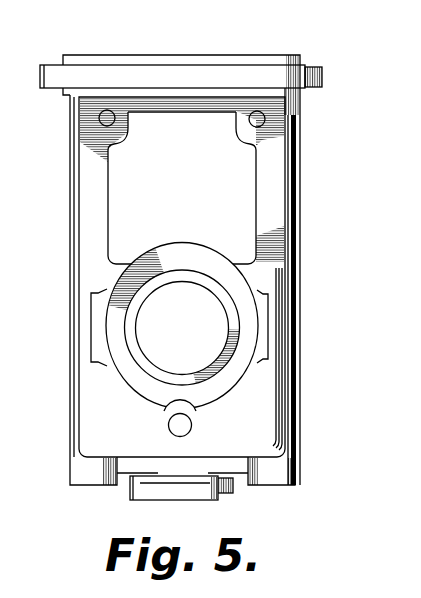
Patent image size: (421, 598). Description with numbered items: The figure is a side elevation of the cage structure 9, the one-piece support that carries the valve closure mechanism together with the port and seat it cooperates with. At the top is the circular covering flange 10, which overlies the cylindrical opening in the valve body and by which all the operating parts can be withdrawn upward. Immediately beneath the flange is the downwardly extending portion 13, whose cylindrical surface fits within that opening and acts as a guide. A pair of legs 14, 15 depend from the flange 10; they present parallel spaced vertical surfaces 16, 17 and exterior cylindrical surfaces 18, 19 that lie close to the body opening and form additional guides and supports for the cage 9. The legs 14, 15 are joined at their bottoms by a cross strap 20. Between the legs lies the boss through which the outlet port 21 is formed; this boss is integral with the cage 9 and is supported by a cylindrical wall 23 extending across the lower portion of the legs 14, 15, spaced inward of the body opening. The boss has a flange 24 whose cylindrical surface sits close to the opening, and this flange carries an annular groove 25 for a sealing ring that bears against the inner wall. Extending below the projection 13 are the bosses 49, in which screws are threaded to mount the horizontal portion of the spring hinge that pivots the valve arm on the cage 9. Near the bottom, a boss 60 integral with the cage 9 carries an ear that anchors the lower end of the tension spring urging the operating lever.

The cage structure 9 is at (303, 188).
The circular covering flange 10 is at (320, 75).
The downwardly extending portion 13 is at (72, 103).
The leg 14 is at (83, 195).
The leg 15 is at (274, 156).
The vertical surface 16 is at (255, 172).
The vertical surface 17 is at (110, 183).
The exterior cylindrical surface 18 is at (297, 212).
The exterior cylindrical surface 19 is at (73, 168).
The cross strap 20 is at (221, 474).
The outlet port 21 is at (158, 292).
The cylindrical wall 23 is at (292, 390).
The flange 24 is at (175, 245).
The annular groove 25 is at (199, 266).
The boss 49 is at (130, 138).
The boss 60 is at (140, 493).